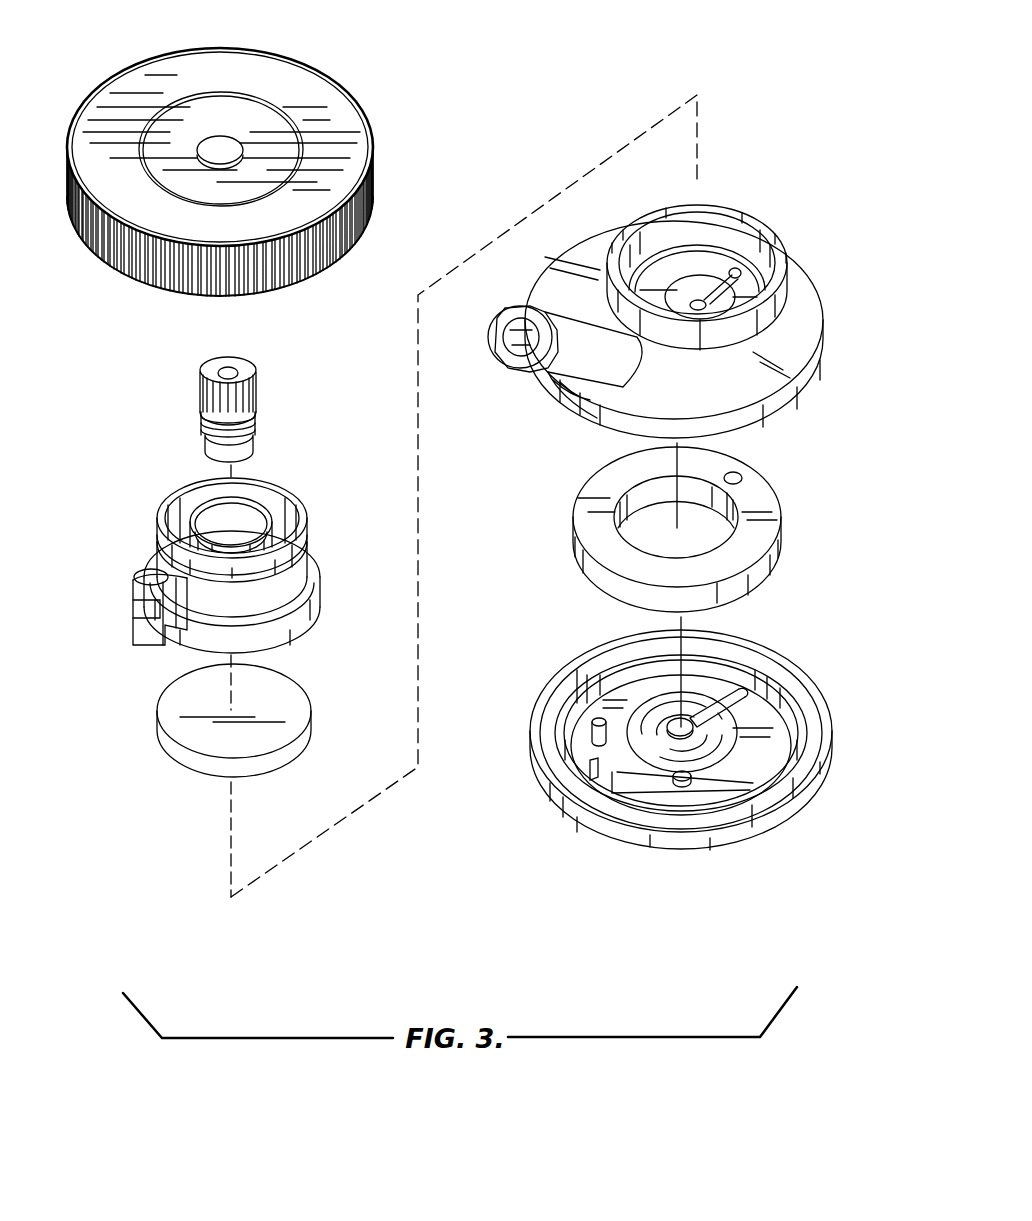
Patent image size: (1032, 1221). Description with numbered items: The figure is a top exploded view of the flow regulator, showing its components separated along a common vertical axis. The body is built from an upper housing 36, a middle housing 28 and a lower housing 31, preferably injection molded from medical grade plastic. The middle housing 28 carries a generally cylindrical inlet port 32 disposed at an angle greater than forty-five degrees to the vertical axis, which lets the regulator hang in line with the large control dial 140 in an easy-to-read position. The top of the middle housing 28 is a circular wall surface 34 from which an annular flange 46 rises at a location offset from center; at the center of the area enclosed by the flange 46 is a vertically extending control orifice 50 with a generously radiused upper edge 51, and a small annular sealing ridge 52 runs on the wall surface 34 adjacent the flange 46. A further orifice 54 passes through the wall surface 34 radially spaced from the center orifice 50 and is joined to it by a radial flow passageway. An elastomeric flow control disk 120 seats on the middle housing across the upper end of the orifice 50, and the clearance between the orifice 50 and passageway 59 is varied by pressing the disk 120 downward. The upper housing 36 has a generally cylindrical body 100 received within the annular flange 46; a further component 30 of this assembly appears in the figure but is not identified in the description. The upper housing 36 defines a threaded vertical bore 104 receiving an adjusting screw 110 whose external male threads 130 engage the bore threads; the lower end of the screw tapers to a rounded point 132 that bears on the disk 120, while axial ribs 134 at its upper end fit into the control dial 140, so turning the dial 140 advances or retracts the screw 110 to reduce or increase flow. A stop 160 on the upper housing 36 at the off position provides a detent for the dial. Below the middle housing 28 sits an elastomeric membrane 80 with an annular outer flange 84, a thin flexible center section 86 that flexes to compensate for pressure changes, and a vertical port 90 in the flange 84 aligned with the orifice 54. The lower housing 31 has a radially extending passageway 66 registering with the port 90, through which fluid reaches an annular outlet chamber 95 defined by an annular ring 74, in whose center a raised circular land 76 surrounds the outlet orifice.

The control dial 140 is at (333, 73).
The axial ribs 134 is at (200, 382).
The external male threads 130 is at (258, 427).
The rounded point 132 is at (250, 462).
The adjusting screw 110 is at (218, 399).
The vertical bore 104 is at (215, 520).
The cylinder 30 is at (300, 518).
The upper housing 36 is at (312, 572).
The stop 160 is at (142, 575).
The cylindrical body 100 is at (214, 564).
The elastomeric flow control disk 120 is at (180, 712).
The middle housing 28 is at (673, 427).
The circular wall surface 34 is at (553, 297).
The inlet port 32 is at (547, 397).
The annular sealing ridge 52 is at (767, 292).
The passageway 59 is at (757, 267).
The radiused upper edge 51 is at (665, 273).
The orifice 54 is at (760, 297).
The control orifice 50 is at (698, 273).
The annular flange 46 is at (768, 320).
The elastomeric membrane 80 is at (691, 517).
The annular outer flange 84 is at (753, 538).
The thin flexible center section 86 is at (648, 531).
The vertical port 90 is at (733, 478).
The lower housing 31 is at (687, 732).
The annular outlet chamber 95 is at (747, 743).
The annular flange 74 is at (730, 757).
The radially extending passageway 66 is at (733, 693).
The raised circular land 76 is at (667, 707).